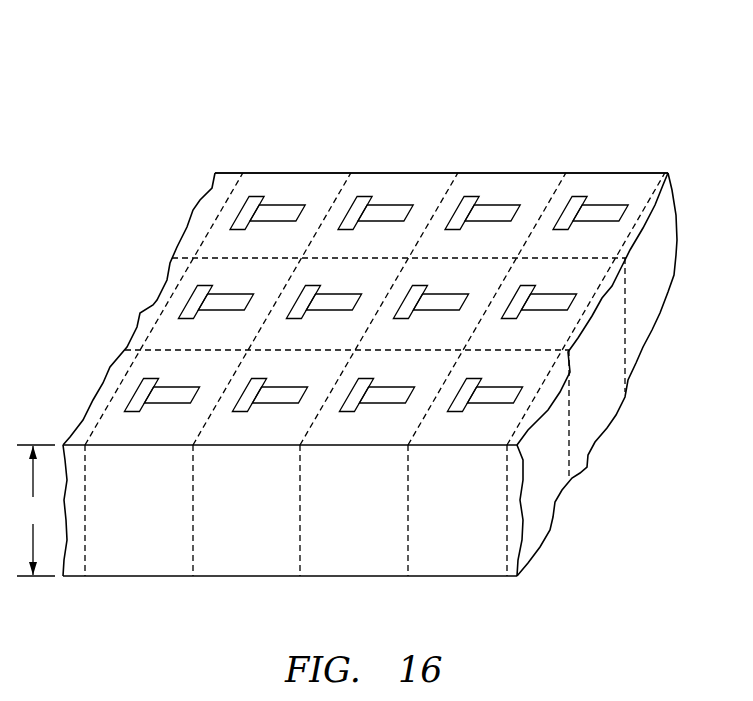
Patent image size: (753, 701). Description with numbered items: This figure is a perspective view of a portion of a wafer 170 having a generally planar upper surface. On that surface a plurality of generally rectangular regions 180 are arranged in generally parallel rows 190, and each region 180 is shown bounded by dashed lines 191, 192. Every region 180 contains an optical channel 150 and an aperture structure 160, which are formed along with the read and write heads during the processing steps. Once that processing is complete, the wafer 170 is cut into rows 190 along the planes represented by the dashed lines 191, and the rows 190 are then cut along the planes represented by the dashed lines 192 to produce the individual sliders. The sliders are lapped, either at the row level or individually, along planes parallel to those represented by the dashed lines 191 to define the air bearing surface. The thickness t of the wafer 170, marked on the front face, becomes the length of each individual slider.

The optical channel 150 is at (490, 386).
The aperture structure 160 is at (457, 412).
The wafer 170 is at (110, 56).
The generally rectangular region 180 is at (657, 175).
The row 190 is at (255, 172).
The dashed line 191 is at (341, 190).
The dashed line 192 is at (180, 258).